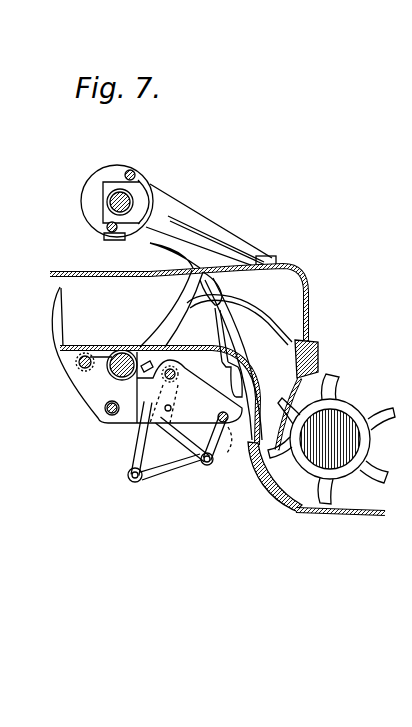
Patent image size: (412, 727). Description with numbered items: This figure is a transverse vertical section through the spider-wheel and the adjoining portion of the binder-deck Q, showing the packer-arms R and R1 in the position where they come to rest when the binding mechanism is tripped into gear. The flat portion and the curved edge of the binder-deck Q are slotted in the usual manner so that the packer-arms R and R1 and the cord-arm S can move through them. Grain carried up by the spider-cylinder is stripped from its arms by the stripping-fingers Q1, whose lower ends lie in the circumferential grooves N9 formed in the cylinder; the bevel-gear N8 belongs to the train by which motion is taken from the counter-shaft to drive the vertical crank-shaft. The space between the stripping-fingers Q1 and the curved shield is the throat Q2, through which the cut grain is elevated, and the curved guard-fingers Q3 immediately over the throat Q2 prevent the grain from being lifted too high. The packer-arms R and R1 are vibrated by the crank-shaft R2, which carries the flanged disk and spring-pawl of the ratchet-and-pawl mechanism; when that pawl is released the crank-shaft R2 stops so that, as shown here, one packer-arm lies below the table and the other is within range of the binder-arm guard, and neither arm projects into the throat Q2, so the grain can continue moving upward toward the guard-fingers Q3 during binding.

The binder-deck Q is at (133, 348).
The stripping-fingers Q1 is at (287, 388).
The throat Q2 is at (316, 458).
The guard-fingers Q3 is at (272, 313).
The cord-arm S is at (181, 295).
The packer-arm R is at (164, 445).
The packer-arm R1 is at (228, 340).
The crank-shaft R2 is at (194, 449).
The bevel-gear N8 is at (330, 439).
The circumferential grooves N9 is at (331, 439).